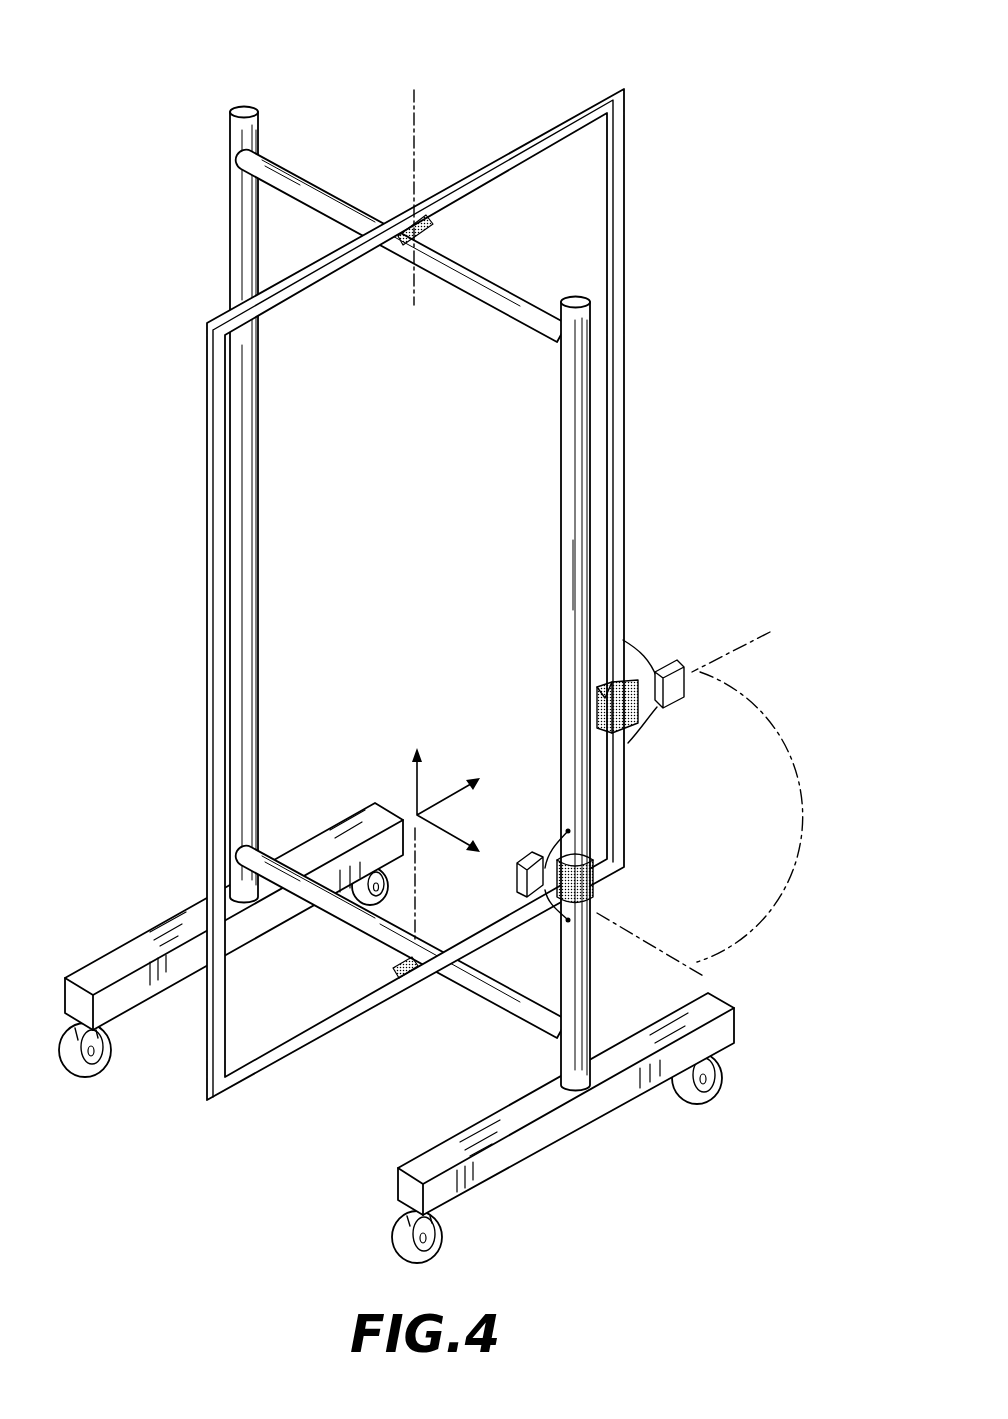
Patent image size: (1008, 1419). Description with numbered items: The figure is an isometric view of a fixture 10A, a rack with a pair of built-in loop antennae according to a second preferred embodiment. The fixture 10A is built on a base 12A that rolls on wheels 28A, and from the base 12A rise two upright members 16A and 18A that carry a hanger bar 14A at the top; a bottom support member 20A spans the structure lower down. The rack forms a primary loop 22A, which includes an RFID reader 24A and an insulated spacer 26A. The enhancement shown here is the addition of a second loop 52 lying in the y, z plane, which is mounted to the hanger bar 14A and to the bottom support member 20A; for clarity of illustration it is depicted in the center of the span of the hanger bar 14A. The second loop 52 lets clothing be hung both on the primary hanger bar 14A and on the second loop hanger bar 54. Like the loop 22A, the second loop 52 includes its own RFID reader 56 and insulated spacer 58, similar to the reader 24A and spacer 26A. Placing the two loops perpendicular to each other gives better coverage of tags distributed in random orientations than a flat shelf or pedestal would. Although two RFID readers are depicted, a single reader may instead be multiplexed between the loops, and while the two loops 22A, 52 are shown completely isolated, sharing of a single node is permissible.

The fixture 10A is at (459, 654).
The base 12A is at (736, 1025).
The hanger bar 14A is at (470, 278).
The upright member 16A is at (514, 694).
The upright member 18A is at (232, 210).
The bottom support member 20A is at (472, 985).
The loop 22A is at (573, 573).
The RFID reader 24A is at (528, 855).
The insulated spacer 26A is at (597, 875).
The wheels 28A is at (372, 882).
The second loop 52 is at (484, 572).
The second loop hanger bar 54 is at (538, 140).
The RFID reader 56 is at (681, 662).
The insulated spacer 58 is at (637, 716).